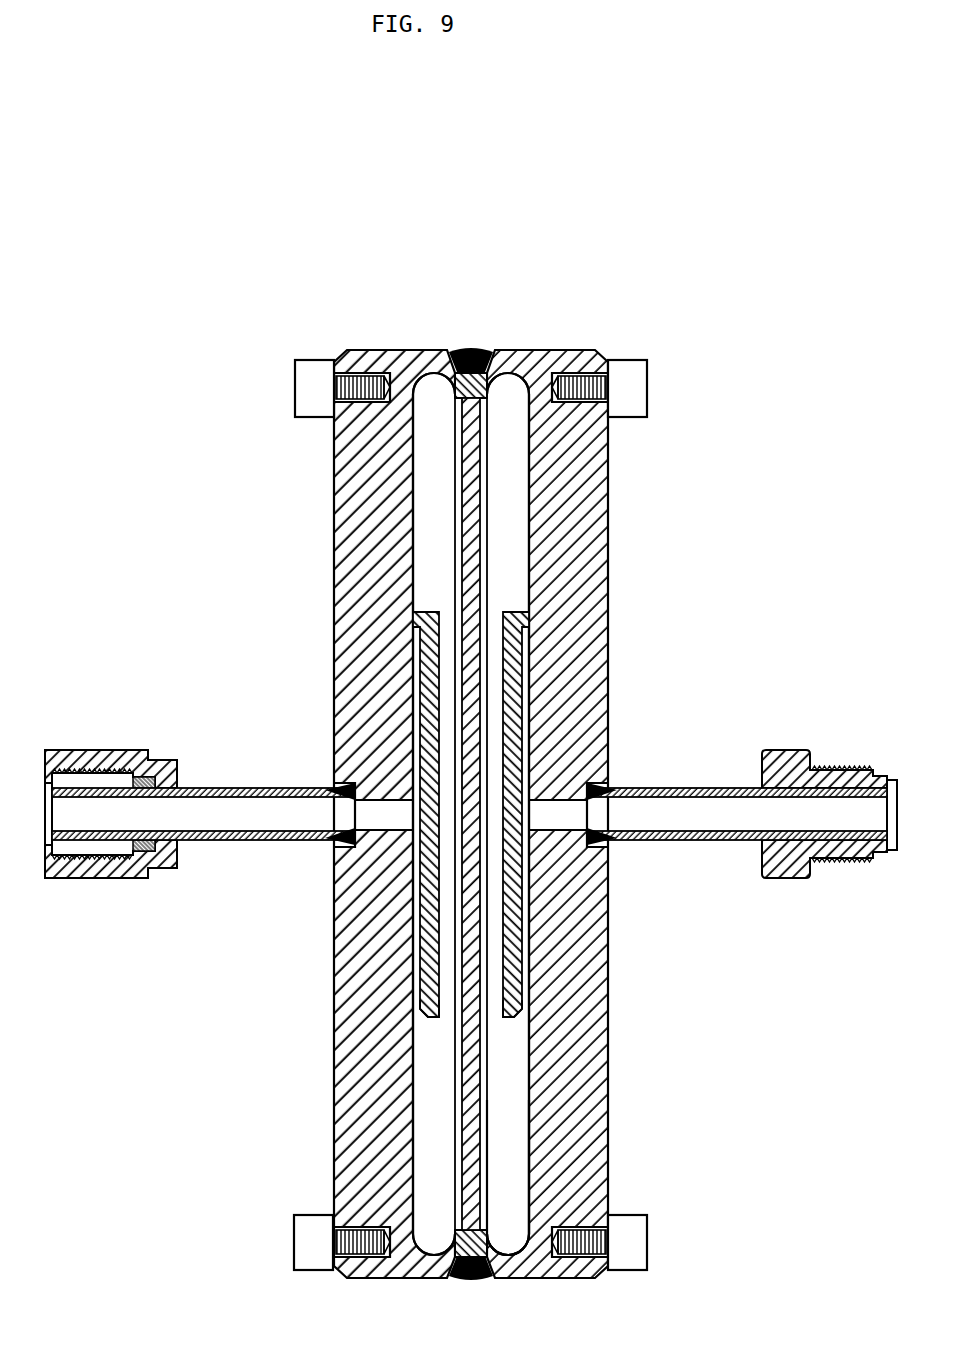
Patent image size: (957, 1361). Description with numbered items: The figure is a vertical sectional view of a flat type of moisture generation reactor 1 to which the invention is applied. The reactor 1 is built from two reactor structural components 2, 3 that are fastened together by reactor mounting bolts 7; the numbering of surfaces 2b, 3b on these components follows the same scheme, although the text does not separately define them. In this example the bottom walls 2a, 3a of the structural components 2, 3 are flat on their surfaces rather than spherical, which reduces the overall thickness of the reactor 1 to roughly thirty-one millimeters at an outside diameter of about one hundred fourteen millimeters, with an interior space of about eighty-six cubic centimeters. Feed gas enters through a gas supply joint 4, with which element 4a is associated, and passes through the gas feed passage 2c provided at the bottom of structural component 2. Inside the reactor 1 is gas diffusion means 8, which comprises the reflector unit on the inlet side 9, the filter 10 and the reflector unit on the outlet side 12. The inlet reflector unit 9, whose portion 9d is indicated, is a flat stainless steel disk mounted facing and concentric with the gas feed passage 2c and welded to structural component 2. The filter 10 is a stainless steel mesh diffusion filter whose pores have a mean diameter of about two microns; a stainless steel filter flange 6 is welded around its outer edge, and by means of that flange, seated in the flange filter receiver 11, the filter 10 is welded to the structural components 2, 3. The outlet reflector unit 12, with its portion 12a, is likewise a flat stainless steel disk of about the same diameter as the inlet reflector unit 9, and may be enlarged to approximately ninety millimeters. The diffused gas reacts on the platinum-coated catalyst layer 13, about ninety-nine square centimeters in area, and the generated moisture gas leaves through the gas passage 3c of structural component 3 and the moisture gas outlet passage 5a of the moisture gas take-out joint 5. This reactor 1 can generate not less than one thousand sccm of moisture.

The reactor 1 is at (465, 747).
The reactor structural component 2 is at (354, 785).
The bottom wall 2a is at (425, 552).
The first block mating face 2b is at (438, 363).
The gas passage 2c is at (378, 808).
The reactor structural component 3 is at (581, 785).
The bottom wall 3a is at (512, 555).
The second block mating face 3b is at (509, 363).
The gas passage 3c is at (580, 836).
The gas supply joint 4 is at (200, 797).
The inlet tube 4a is at (217, 815).
The moisture gas take-out joint 5 is at (742, 777).
The moisture gas outlet passage 5a is at (708, 812).
The filter flange 6 is at (471, 351).
The reactor mounting bolts 7 is at (302, 392).
The gas diffusion means 8 is at (457, 814).
The reflector unit on the inlet side 9 is at (363, 850).
The first sleeve end opening 9d is at (445, 1003).
The filter 10 is at (463, 1062).
The flange filter receiver 11 is at (487, 403).
The reflector unit on the outlet side 12 is at (478, 885).
The second sleeve end opening 12a is at (512, 1019).
The platinum-coated catalyst layer 13 is at (518, 1143).